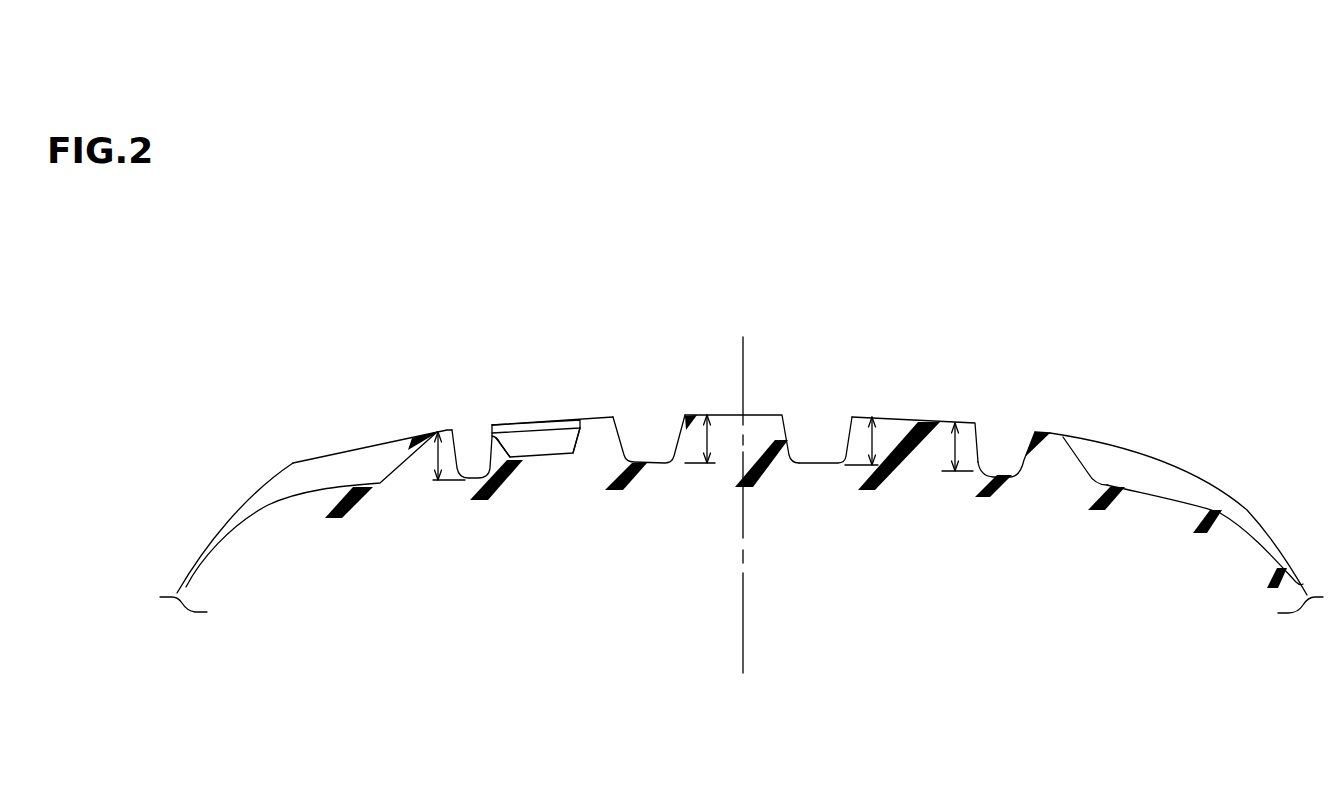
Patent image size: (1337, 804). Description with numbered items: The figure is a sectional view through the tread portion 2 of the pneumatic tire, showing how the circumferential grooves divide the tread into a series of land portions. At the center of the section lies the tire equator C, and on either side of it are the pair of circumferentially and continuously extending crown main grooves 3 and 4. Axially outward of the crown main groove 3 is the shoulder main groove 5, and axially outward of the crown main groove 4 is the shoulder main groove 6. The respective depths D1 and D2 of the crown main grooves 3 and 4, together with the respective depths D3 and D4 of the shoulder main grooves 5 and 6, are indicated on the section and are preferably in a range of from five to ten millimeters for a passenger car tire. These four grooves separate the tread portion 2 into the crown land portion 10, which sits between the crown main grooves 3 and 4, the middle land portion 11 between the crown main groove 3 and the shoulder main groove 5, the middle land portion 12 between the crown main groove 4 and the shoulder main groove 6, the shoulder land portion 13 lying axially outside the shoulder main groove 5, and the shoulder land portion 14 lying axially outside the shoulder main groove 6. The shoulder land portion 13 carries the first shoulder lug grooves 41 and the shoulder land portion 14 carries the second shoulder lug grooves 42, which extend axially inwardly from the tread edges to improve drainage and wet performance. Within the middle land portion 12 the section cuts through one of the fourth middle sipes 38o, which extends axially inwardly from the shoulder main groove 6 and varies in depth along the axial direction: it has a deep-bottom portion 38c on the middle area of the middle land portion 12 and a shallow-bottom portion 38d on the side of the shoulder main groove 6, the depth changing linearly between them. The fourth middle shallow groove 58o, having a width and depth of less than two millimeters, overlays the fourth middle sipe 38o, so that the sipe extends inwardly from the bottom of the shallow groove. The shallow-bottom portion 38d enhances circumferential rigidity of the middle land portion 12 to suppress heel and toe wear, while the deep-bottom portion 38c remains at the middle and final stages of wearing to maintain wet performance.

The tread portion 2 is at (1158, 358).
The crown main groove 3 is at (825, 427).
The crown main groove 4 is at (653, 440).
The shoulder main groove 5 is at (1003, 435).
The shoulder main groove 6 is at (475, 448).
The crown land portion 10 is at (762, 413).
The middle land portion 11 is at (908, 418).
The middle land portion 12 is at (553, 417).
The shoulder land portion 13 is at (1100, 440).
The shoulder land portion 14 is at (358, 440).
The first shoulder lug groove 41 is at (1143, 472).
The second shoulder lug groove 42 is at (327, 448).
The fourth middle sipe 38o is at (532, 443).
The deep-bottom portion 38c is at (553, 457).
The shallow-bottom portion 38d is at (497, 438).
The fourth middle shallow groove 58o is at (570, 425).
The tire equator C is at (742, 387).
The depth of crown main groove D1 is at (865, 450).
The depth of crown main groove D2 is at (697, 440).
The depth of shoulder main groove D3 is at (942, 450).
The depth of shoulder main groove D4 is at (433, 460).